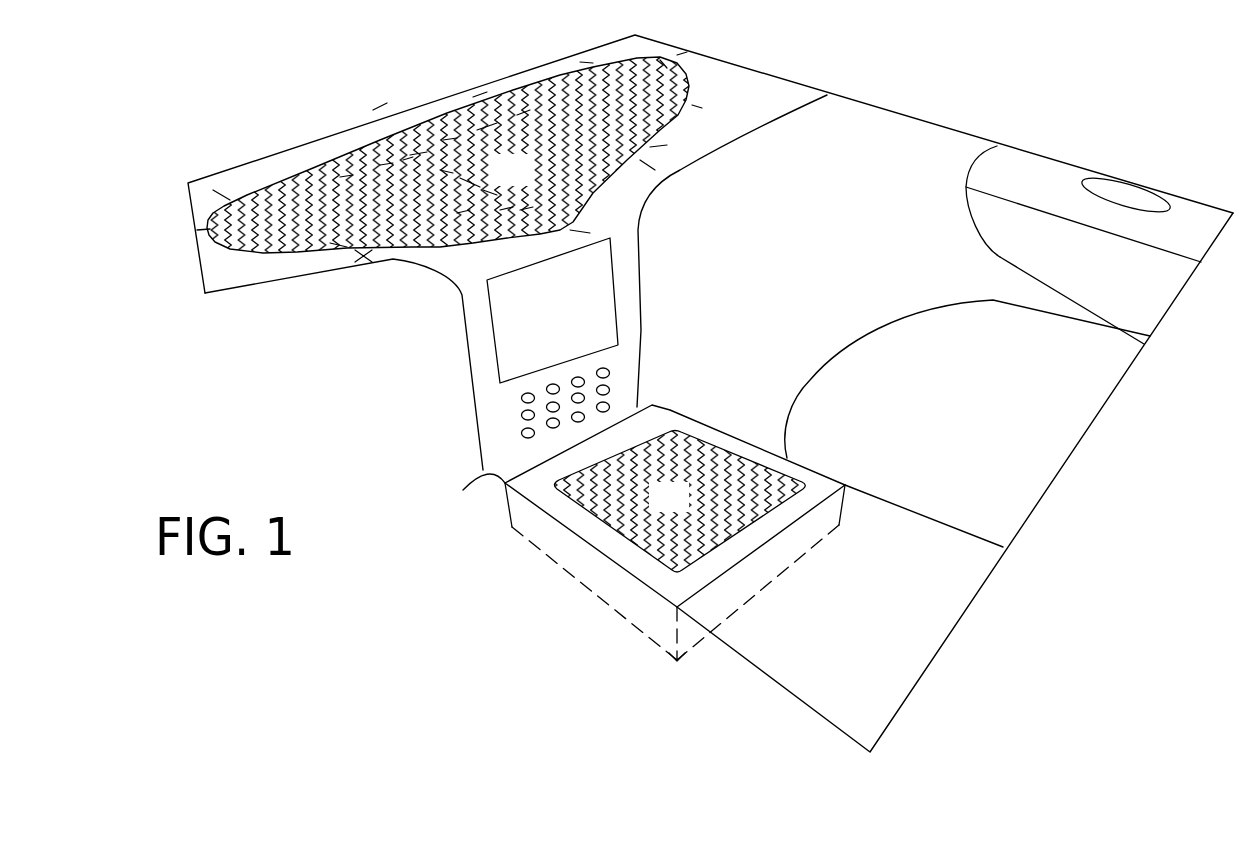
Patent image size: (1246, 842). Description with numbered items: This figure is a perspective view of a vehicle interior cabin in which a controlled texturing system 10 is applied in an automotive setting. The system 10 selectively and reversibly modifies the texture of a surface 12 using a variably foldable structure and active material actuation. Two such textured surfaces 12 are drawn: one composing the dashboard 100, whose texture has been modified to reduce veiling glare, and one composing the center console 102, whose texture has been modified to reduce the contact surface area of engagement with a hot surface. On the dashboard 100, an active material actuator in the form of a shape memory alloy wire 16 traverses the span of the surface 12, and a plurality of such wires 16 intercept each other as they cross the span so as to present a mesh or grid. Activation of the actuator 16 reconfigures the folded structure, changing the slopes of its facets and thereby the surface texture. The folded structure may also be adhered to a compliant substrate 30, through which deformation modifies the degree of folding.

The controlled texturing system 10 is at (471, 68).
The surface 12 is at (531, 182).
The active material actuator 16 is at (352, 141).
The compliant substrate 30 is at (562, 557).
The dashboard 100 is at (767, 112).
The center console 102 is at (867, 602).